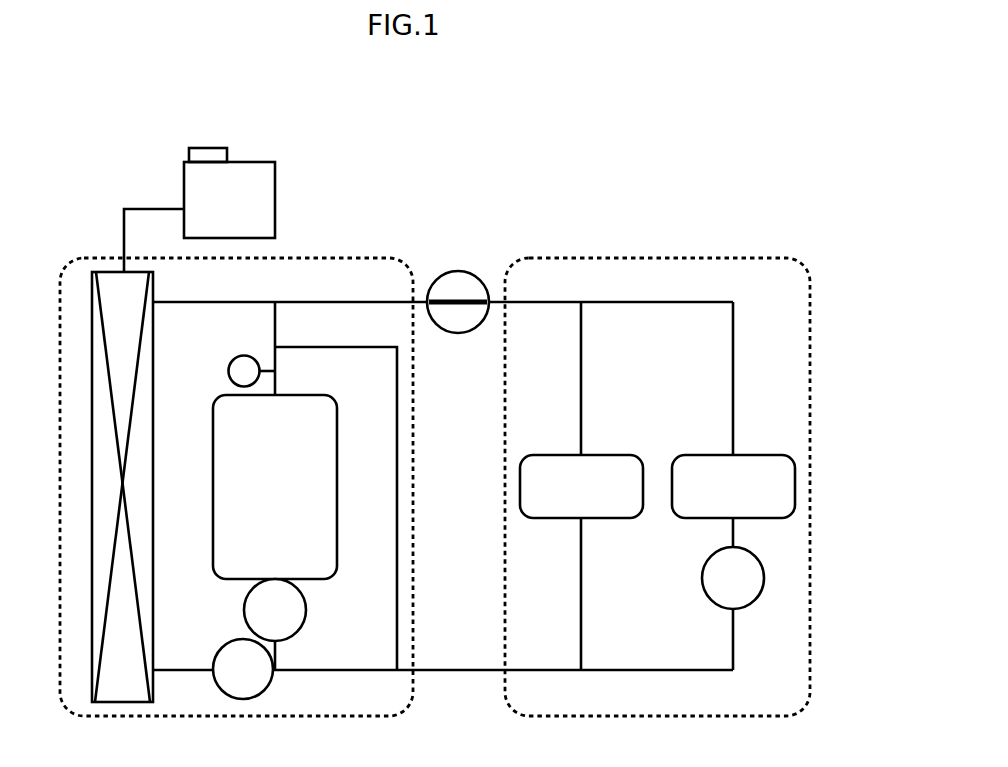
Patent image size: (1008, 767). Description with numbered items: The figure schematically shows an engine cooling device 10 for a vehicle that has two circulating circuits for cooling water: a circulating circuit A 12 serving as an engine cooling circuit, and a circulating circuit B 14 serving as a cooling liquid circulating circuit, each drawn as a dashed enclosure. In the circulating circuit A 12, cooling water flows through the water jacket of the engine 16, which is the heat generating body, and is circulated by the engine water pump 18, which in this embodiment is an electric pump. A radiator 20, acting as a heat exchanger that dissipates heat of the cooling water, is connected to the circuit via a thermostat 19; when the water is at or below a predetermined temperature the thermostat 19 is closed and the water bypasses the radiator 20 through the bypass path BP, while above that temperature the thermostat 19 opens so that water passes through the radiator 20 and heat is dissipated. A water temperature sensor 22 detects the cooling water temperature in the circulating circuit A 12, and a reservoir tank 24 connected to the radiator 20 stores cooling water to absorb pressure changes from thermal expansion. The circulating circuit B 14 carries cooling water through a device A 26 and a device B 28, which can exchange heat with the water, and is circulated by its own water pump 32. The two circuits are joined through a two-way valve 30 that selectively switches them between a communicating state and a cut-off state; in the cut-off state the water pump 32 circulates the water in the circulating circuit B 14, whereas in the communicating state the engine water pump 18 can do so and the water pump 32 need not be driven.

The engine cooling device 10 is at (603, 134).
The circulating circuit A 12 is at (367, 258).
The circulating circuit B 14 is at (747, 258).
The engine 16 is at (338, 426).
The engine water pump 18 is at (306, 609).
The thermostat 19 is at (267, 688).
The radiator 20 is at (156, 487).
The water temperature sensor 22 is at (232, 360).
The reservoir tank 24 is at (277, 178).
The device A 26 is at (610, 455).
The device B 28 is at (752, 455).
The two-way valve 30 is at (474, 272).
The water pump 32 is at (702, 578).
The bypass path BP is at (396, 442).